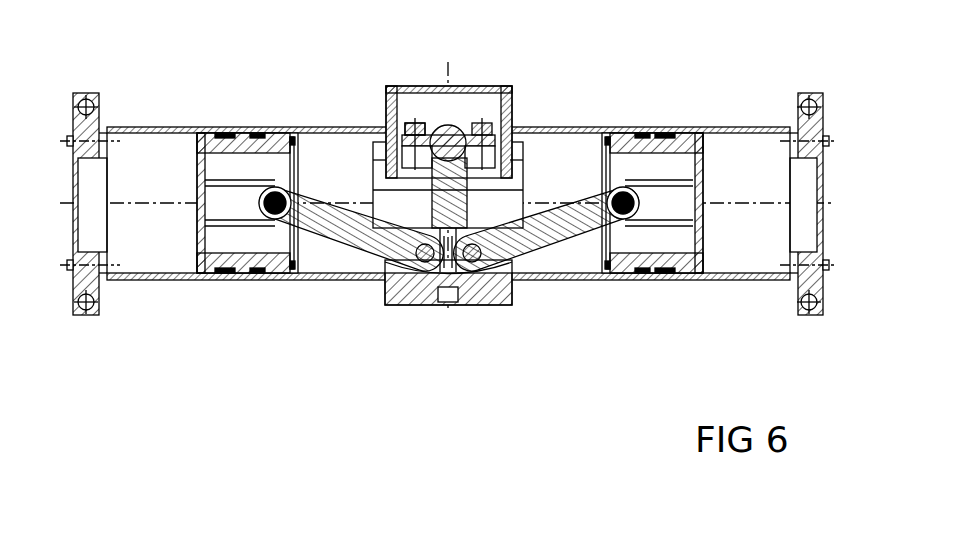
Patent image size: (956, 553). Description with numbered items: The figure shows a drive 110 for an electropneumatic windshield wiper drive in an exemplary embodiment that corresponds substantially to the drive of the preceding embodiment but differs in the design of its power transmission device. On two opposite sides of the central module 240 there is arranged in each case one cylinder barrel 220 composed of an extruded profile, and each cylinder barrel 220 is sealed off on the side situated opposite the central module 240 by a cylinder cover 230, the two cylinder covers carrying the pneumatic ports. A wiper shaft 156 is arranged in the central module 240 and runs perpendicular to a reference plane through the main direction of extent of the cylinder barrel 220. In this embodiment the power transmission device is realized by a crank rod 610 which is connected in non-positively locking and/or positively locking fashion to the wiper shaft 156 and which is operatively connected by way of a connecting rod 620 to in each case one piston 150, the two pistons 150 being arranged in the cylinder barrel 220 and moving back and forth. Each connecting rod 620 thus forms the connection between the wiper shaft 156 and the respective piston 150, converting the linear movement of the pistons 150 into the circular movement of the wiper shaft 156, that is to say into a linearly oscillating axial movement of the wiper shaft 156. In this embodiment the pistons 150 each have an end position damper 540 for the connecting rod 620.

The drive 110 is at (136, 53).
The cylinder barrel 220 is at (256, 124).
The wiper shaft 156 is at (416, 122).
The crank rod 610 is at (490, 136).
The connecting rod 620 is at (564, 192).
The piston 150 is at (194, 264).
The central module 240 is at (377, 286).
The end position damper 540 is at (591, 265).
The cylinder cover 230 is at (787, 293).